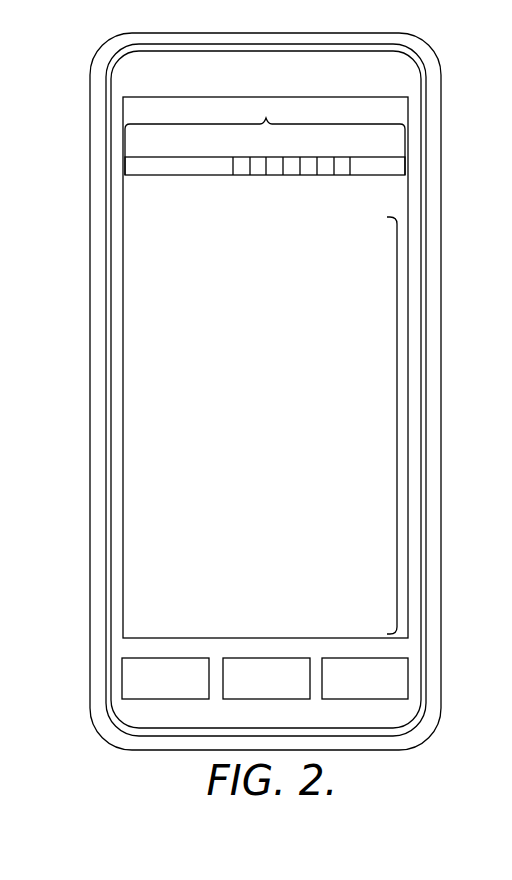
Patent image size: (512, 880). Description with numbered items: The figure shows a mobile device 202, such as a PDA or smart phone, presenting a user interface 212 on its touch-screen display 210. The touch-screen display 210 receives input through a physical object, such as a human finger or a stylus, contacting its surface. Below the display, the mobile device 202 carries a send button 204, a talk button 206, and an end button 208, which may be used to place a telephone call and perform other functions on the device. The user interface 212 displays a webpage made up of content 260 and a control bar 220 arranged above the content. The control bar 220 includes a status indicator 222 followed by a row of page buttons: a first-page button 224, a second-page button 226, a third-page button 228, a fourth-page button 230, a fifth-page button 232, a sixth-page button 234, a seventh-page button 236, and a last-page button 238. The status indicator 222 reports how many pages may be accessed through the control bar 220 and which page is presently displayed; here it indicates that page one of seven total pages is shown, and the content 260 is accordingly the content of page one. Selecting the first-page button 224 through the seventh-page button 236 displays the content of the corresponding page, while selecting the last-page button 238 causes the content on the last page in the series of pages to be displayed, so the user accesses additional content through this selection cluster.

The mobile device 202 is at (56, 155).
The touch-screen display 210 is at (394, 83).
The user interface 212 is at (398, 208).
The control bar 220 is at (265, 149).
The status indicator 222 is at (166, 176).
The first-page button 224 is at (241, 176).
The second-page button 226 is at (259, 157).
The third-page button 228 is at (275, 176).
The fourth-page button 230 is at (292, 157).
The fifth-page button 232 is at (308, 176).
The sixth-page button 234 is at (325, 157).
The seventh-page button 236 is at (342, 176).
The last-page button 238 is at (375, 157).
The content 260 is at (397, 428).
The send button 204 is at (168, 699).
The talk button 206 is at (267, 699).
The end button 208 is at (365, 699).